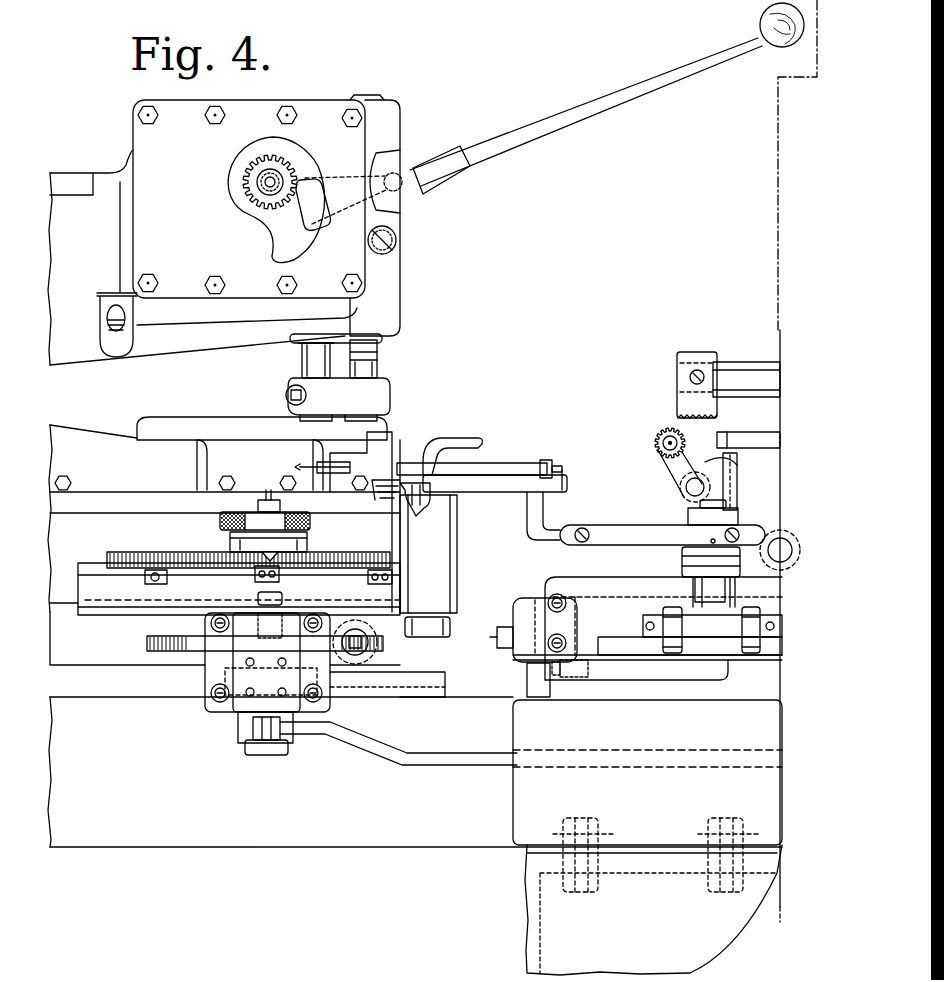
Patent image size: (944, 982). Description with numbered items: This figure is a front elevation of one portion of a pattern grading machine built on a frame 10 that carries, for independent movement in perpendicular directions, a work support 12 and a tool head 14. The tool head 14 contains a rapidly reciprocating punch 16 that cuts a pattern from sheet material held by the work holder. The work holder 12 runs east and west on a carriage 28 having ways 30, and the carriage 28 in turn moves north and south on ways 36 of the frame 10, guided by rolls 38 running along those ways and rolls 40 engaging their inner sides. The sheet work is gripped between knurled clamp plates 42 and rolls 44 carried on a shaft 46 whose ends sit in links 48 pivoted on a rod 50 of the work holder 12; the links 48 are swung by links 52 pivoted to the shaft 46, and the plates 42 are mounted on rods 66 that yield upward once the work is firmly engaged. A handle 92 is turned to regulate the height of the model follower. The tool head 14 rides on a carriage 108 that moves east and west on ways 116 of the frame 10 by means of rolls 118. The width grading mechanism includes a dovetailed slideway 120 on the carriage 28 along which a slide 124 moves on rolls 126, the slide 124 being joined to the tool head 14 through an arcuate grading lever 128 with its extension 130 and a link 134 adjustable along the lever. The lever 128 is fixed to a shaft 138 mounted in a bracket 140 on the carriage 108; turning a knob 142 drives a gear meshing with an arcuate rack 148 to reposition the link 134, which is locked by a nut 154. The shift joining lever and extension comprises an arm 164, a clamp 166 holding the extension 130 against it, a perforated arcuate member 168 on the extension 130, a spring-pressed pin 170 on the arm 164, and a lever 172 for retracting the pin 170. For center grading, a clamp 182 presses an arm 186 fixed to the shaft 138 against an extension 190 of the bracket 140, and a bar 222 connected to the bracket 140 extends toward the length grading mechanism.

The frame 10 is at (448, 840).
The work support 12 is at (772, 463).
The tool head 14 is at (390, 128).
The reciprocating punch 16 is at (377, 371).
The carriage 28 is at (518, 666).
The ways 30 is at (617, 581).
The ways 36 is at (542, 698).
The rolls 38 is at (535, 604).
The rolls 40 is at (590, 668).
The knurled clamp plates 42 is at (677, 406).
The rolls 44 is at (658, 433).
The shaft 46 is at (663, 447).
The links 48 is at (670, 470).
The rod 50 is at (686, 490).
The links 52 is at (706, 436).
The rods 66 is at (740, 365).
The handle 92 is at (767, 531).
The carriage 108 is at (80, 665).
The ways 116 is at (412, 684).
The rolls 118 is at (392, 678).
The dovetailed slideway 120 is at (620, 640).
The slide 124 is at (733, 588).
The rolls 126 is at (690, 656).
The arcuate grading lever 128 is at (105, 612).
The extension 130 is at (581, 525).
The link 134 is at (230, 541).
The shaft 138 is at (425, 640).
The bracket 140 is at (210, 673).
The knob 142 is at (300, 526).
The arcuate rack 148 is at (128, 555).
The nut 154 is at (258, 504).
The arm 164 is at (457, 562).
The clamp 166 is at (478, 441).
The perforated arcuate member 168 is at (492, 464).
The spring-pressed pin 170 is at (408, 514).
The lever 172 is at (377, 490).
The clamp 182 is at (258, 596).
The arm 186 is at (260, 630).
The extension 190 is at (147, 642).
The bar 222 is at (405, 758).